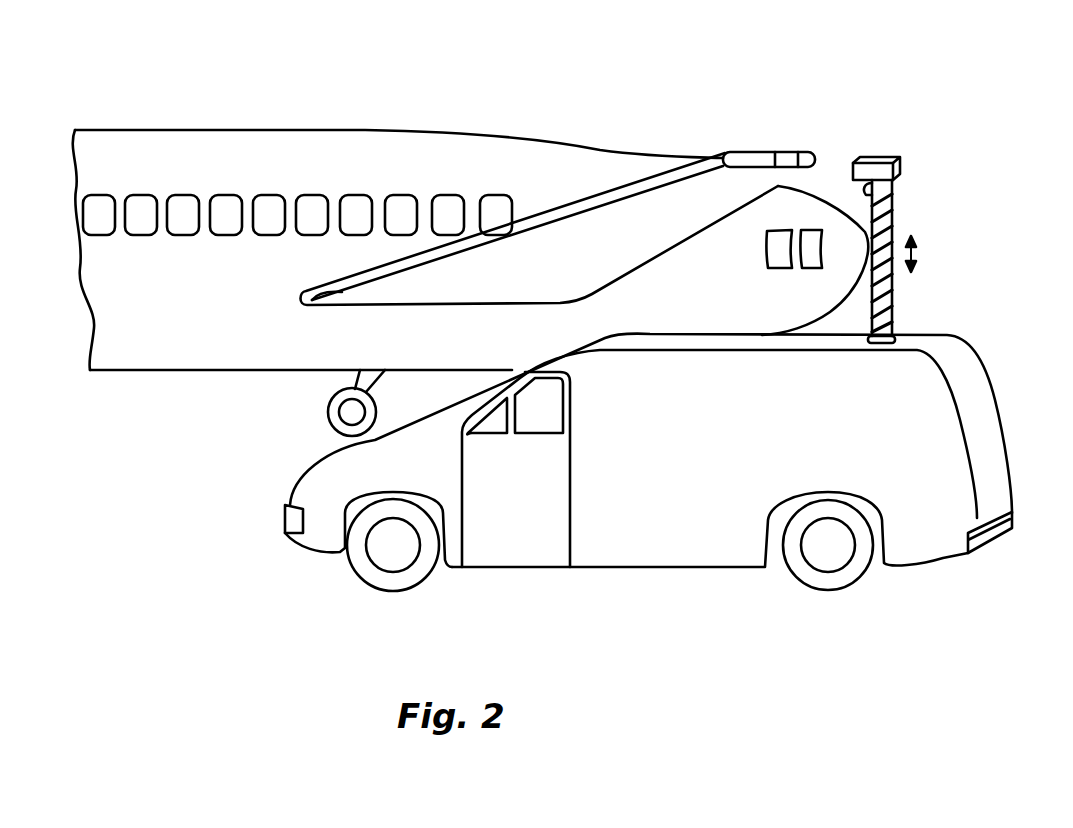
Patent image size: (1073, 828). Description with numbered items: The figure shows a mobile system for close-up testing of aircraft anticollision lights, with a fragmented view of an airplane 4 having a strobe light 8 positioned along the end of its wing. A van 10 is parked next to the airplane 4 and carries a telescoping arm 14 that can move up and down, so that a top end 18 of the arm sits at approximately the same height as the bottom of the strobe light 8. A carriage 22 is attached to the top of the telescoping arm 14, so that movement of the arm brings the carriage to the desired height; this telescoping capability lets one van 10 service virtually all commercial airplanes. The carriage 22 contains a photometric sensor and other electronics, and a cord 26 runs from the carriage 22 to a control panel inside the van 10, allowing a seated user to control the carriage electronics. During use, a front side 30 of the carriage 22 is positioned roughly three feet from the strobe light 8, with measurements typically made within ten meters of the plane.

The airplane 4 is at (365, 130).
The strobe light 8 is at (784, 152).
The van 10 is at (611, 548).
The telescoping arm 14 is at (894, 283).
The top end 18 is at (894, 178).
The carriage 22 is at (893, 161).
The cord 26 is at (894, 222).
The front side 30 is at (862, 163).